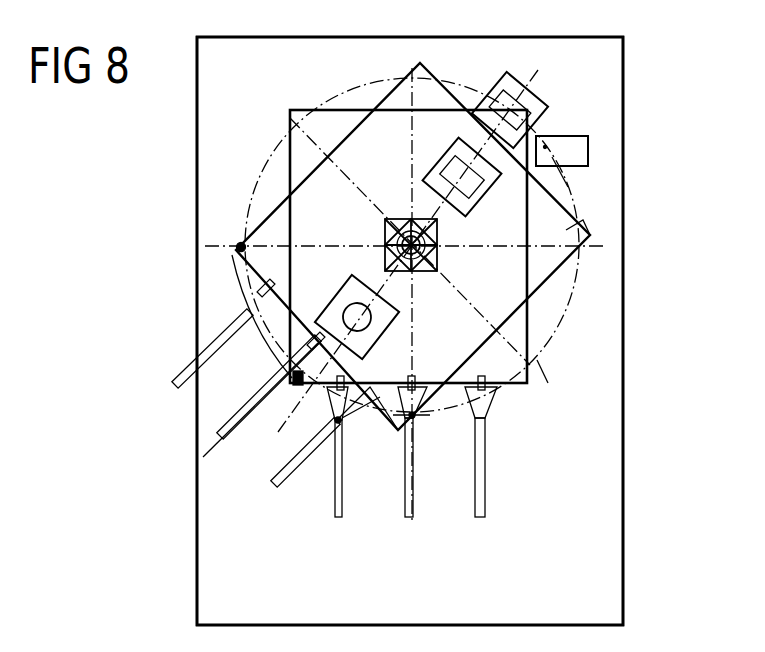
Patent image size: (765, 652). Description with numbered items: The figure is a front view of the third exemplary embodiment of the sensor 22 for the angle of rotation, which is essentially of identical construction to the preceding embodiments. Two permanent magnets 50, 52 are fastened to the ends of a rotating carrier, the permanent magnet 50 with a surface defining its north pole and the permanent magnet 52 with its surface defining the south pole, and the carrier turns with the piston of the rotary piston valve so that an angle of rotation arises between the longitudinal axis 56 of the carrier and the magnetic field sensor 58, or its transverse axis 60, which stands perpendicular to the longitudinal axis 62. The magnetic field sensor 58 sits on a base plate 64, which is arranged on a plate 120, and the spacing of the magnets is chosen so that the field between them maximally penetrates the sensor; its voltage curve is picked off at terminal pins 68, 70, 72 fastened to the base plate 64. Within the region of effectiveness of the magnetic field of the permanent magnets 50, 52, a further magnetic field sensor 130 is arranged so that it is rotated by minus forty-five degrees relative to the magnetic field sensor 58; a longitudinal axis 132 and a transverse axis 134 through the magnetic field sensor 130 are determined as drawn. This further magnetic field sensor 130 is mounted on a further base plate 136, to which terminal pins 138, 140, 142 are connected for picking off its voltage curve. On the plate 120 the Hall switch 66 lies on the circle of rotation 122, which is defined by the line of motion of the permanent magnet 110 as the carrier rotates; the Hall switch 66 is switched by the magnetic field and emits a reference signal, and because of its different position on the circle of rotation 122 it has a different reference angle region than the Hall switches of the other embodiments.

The sensor for the angle of rotation 22 is at (160, 189).
The permanent magnet 50 is at (470, 195).
The permanent magnet 52 is at (332, 305).
The longitudinal axis of the carrier 56 is at (552, 60).
The magnetic field sensor 58 is at (440, 265).
The transverse axis 60 is at (250, 235).
The longitudinal axis 62 is at (402, 83).
The base plate 64 is at (320, 130).
The Hall switch 66 is at (588, 150).
The terminal pin 68 is at (340, 517).
The terminal pin 70 is at (415, 503).
The terminal pin 72 is at (485, 502).
The permanent magnet 110 is at (547, 98).
The plate 120 is at (597, 530).
The circle of rotation 122 is at (536, 335).
The further magnetic field sensor 130 is at (385, 232).
The longitudinal axis 132 is at (568, 187).
The transverse axis 134 is at (367, 198).
The further base plate 136 is at (583, 220).
The terminal pin 138 is at (183, 370).
The terminal pin 140 is at (226, 427).
The terminal pin 142 is at (277, 490).